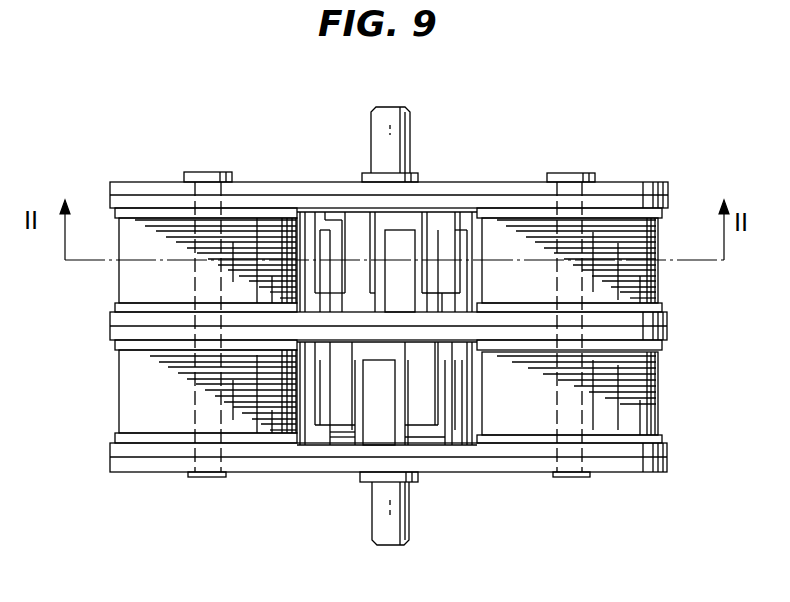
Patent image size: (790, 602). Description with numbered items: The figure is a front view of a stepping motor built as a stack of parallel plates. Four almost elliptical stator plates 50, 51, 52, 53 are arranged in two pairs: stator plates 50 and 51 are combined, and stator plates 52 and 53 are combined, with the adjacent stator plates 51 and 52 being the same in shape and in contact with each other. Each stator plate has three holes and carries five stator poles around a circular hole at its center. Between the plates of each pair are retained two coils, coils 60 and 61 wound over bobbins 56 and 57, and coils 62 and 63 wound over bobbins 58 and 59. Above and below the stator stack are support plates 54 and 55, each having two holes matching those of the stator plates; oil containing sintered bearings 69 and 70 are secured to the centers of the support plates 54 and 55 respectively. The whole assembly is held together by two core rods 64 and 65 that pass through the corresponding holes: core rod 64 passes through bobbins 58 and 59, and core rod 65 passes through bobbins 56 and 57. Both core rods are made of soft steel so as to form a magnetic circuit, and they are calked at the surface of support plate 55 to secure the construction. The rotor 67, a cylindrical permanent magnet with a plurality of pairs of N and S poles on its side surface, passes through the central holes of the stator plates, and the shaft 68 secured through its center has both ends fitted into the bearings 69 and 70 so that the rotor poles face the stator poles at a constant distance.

The stator plate 50 is at (668, 204).
The stator plate 51 is at (667, 320).
The stator plate 52 is at (667, 334).
The stator plate 53 is at (667, 455).
The support plate 54 is at (628, 182).
The support plate 55 is at (652, 472).
The bobbin 56 is at (662, 214).
The bobbin 57 is at (660, 350).
The bobbin 58 is at (115, 213).
The bobbin 59 is at (115, 343).
The coil 60 is at (660, 292).
The coil 61 is at (656, 398).
The coil 62 is at (119, 280).
The coil 63 is at (119, 382).
The core rod 64 is at (195, 478).
The core rod 65 is at (572, 477).
The rotor 67 is at (355, 437).
The shaft 68 is at (372, 530).
The oil containing sintered bearing 69 is at (418, 180).
The oil containing sintered bearing 70 is at (418, 479).